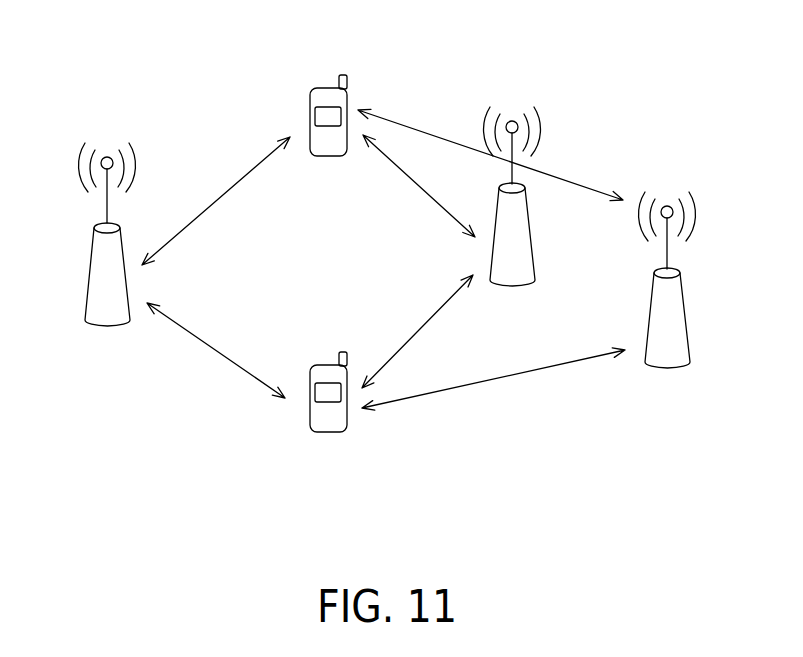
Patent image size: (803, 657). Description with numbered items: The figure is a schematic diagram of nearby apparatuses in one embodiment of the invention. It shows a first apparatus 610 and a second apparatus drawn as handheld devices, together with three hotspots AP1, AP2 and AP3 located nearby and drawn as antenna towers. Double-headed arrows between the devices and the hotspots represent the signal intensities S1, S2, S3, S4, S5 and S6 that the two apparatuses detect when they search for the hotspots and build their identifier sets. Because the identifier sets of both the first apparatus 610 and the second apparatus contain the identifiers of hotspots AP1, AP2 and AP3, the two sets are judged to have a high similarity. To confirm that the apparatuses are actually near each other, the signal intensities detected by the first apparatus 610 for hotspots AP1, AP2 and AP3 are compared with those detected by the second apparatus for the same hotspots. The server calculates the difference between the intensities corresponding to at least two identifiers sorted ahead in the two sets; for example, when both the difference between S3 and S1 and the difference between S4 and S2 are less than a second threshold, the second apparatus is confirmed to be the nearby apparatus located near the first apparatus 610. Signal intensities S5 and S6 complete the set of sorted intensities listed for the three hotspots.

The first apparatus 610 is at (320, 87).
The hotspot AP1 is at (100, 308).
The hotspot AP2 is at (525, 263).
The hotspot AP3 is at (680, 350).
The signal intensity S1 is at (216, 201).
The signal intensity S2 is at (419, 186).
The signal intensity S3 is at (216, 350).
The signal intensity S4 is at (417, 331).
The signal intensity S5 is at (490, 154).
The signal intensity S6 is at (493, 382).